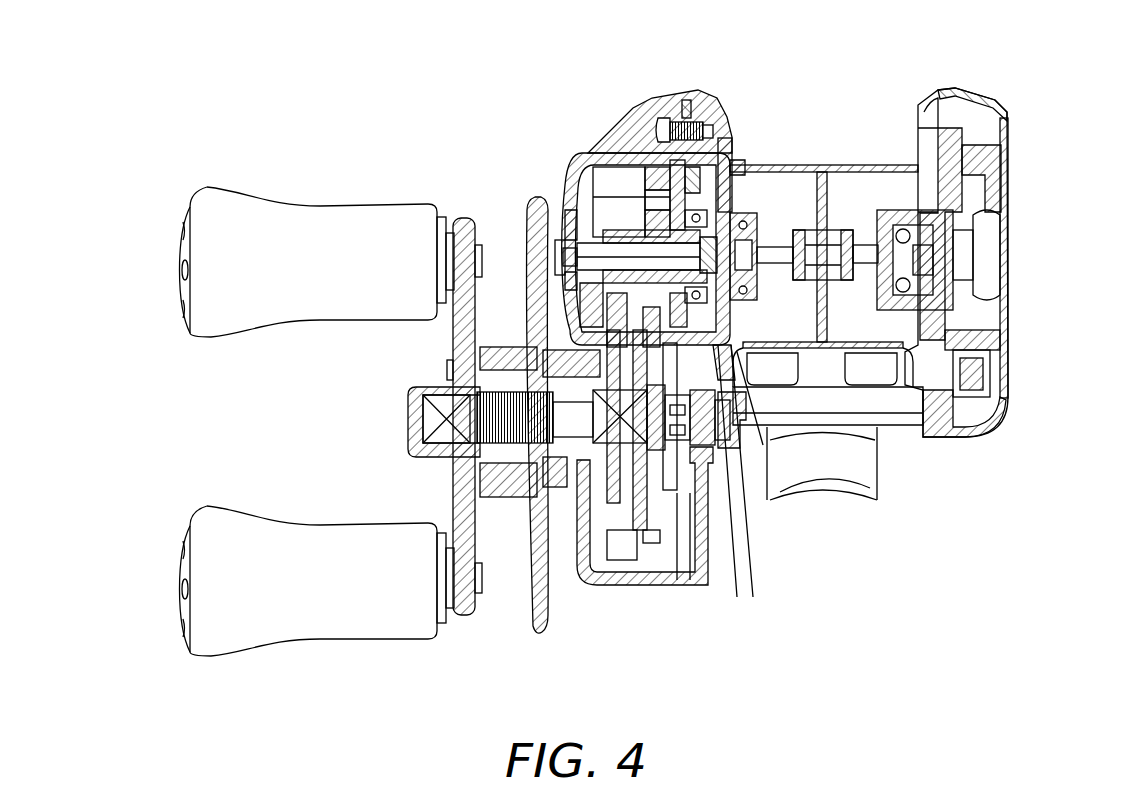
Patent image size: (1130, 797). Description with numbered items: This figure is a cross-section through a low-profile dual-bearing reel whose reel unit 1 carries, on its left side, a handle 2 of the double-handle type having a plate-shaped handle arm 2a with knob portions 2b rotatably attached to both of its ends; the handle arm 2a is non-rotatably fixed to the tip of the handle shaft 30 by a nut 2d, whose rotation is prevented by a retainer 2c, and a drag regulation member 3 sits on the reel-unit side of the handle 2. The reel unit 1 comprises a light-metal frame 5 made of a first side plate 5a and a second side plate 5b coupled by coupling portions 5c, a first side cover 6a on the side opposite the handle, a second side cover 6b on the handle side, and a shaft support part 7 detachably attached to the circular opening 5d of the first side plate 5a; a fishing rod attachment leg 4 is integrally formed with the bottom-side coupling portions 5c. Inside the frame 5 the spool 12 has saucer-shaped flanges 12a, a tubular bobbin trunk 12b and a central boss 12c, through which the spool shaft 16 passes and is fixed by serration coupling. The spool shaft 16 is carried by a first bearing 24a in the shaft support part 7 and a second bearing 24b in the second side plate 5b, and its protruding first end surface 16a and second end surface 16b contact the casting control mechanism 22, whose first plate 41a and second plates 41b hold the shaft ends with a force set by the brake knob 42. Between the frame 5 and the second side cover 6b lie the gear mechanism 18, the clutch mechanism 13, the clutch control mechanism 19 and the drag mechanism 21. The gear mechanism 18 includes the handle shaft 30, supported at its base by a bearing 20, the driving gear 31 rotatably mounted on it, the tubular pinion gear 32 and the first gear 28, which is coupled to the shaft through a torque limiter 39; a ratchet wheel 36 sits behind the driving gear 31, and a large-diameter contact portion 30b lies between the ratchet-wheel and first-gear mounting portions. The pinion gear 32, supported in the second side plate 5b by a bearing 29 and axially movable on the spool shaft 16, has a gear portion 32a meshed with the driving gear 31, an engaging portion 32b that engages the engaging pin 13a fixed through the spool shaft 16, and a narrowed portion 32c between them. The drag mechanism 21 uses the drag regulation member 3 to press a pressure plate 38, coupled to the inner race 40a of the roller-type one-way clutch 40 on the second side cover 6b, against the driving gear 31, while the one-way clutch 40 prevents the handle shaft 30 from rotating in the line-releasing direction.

The reel unit 1 is at (699, 84).
The handle 2 is at (327, 185).
The handle arm 2a is at (445, 500).
The knob portions 2b is at (213, 212).
The retainer 2c is at (443, 367).
The nut 2d is at (407, 410).
The drag regulation member 3 is at (537, 630).
The fishing rod attachment leg 4 is at (860, 463).
The frame 5 is at (742, 96).
The first side plate 5a is at (912, 103).
The second side plate 5b is at (715, 88).
The coupling portions 5c is at (903, 420).
The circular opening 5d is at (926, 132).
The first side cover 6a is at (1010, 100).
The second side cover 6b is at (648, 92).
The shaft support part 7 is at (947, 120).
The spool 12 is at (846, 158).
The flanges 12a is at (745, 158).
The bobbin trunk 12b is at (773, 172).
The boss 12c is at (860, 208).
The clutch mechanism 13 is at (763, 400).
The engaging pin 13a is at (750, 400).
The spool shaft 16 is at (803, 243).
The first end surface 16a is at (1010, 135).
The second end surface 16b is at (578, 260).
The gear mechanism 18 is at (630, 550).
The clutch control mechanism 19 is at (595, 165).
The bearing 20 is at (755, 560).
The drag mechanism 21 is at (578, 558).
The casting control mechanism 22 is at (1000, 207).
The first bearing 24a is at (960, 310).
The second bearing 24b is at (757, 280).
The first gear 28 is at (720, 530).
The bearing 29 is at (750, 530).
The handle shaft 30 is at (410, 420).
The large-diameter contact portion 30b is at (660, 545).
The driving gear 31 is at (618, 580).
The pinion gear 32 is at (592, 200).
The gear portion 32a is at (613, 222).
The engaging portion 32b is at (632, 170).
The narrowed portion 32c is at (582, 152).
The ratchet wheel 36 is at (647, 563).
The pressure plate 38 is at (535, 590).
The torque limiter 39 is at (733, 530).
The one-way clutch 40 is at (540, 337).
The inner race 40a is at (427, 380).
The first plate 41a is at (970, 273).
The second plates 41b is at (565, 275).
The brake knob 42 is at (997, 253).